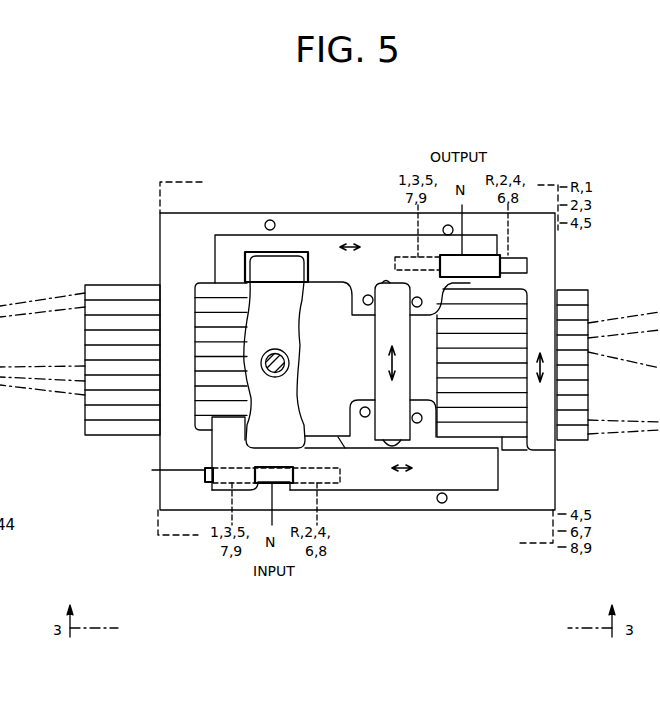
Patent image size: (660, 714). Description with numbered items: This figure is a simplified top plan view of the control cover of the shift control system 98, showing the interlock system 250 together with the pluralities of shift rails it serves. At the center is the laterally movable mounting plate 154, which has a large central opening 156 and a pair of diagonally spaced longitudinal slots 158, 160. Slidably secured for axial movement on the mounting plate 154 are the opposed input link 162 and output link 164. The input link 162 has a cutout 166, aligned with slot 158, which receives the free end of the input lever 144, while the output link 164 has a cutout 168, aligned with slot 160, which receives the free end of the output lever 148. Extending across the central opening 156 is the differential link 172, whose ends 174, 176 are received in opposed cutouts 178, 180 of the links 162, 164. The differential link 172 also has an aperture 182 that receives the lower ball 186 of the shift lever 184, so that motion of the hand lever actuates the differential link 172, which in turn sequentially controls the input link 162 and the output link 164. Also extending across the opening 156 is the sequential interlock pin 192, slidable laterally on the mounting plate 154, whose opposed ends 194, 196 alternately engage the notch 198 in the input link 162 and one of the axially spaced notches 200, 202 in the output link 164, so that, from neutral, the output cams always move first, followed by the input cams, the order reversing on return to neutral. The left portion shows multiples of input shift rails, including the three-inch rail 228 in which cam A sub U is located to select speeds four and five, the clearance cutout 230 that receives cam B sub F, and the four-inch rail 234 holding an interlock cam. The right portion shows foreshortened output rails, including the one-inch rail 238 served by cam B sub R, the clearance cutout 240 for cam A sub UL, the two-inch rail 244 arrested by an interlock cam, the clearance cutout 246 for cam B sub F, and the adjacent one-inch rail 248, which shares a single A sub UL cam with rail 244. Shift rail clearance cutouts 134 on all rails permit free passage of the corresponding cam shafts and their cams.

The shift control system 98 is at (368, 172).
The interlock system 250 is at (235, 186).
The end of differential link 176 is at (275, 250).
The output link 164 is at (350, 234).
The cutout of output link 180 is at (245, 258).
The notch in output link 200 is at (339, 258).
The end of sequential interlock pin 196 is at (390, 286).
The output lever 148 is at (465, 262).
The longitudinal slot of mounting plate 160 is at (515, 268).
The notch in output link 202 is at (437, 276).
The cutout of output link 168 is at (470, 284).
The differential link 172 is at (290, 314).
The lower ball of shift lever 186 is at (267, 352).
The shift lever 184 is at (262, 367).
The aperture of differential link 182 is at (293, 390).
The end of differential link 174 is at (292, 433).
The cutout of input link 178 is at (245, 443).
The sequential interlock pin 192 is at (405, 332).
The end of sequential interlock pin 194 is at (388, 445).
The notch in input link 198 is at (334, 460).
The longitudinal slot of mounting plate 158 is at (180, 469).
The cutout of input link 166 is at (247, 489).
The input lever 144 is at (300, 488).
The input link 162 is at (417, 482).
The central opening of mounting plate 156 is at (516, 456).
The mounting plate 154 is at (538, 491).
The clearance cutout 246 is at (586, 290).
The output shift rail 1" 248 is at (590, 336).
The output shift rail 2" 244 is at (590, 357).
The clearance cutout 240 is at (590, 372).
The shift rail 1" 238 is at (590, 420).
The shift rail 4" 234 is at (100, 284).
The clearance cutout 230 is at (85, 322).
The shift rail 3" 228 is at (85, 363).
The shift rail clearance cutout 134 is at (316, 360).